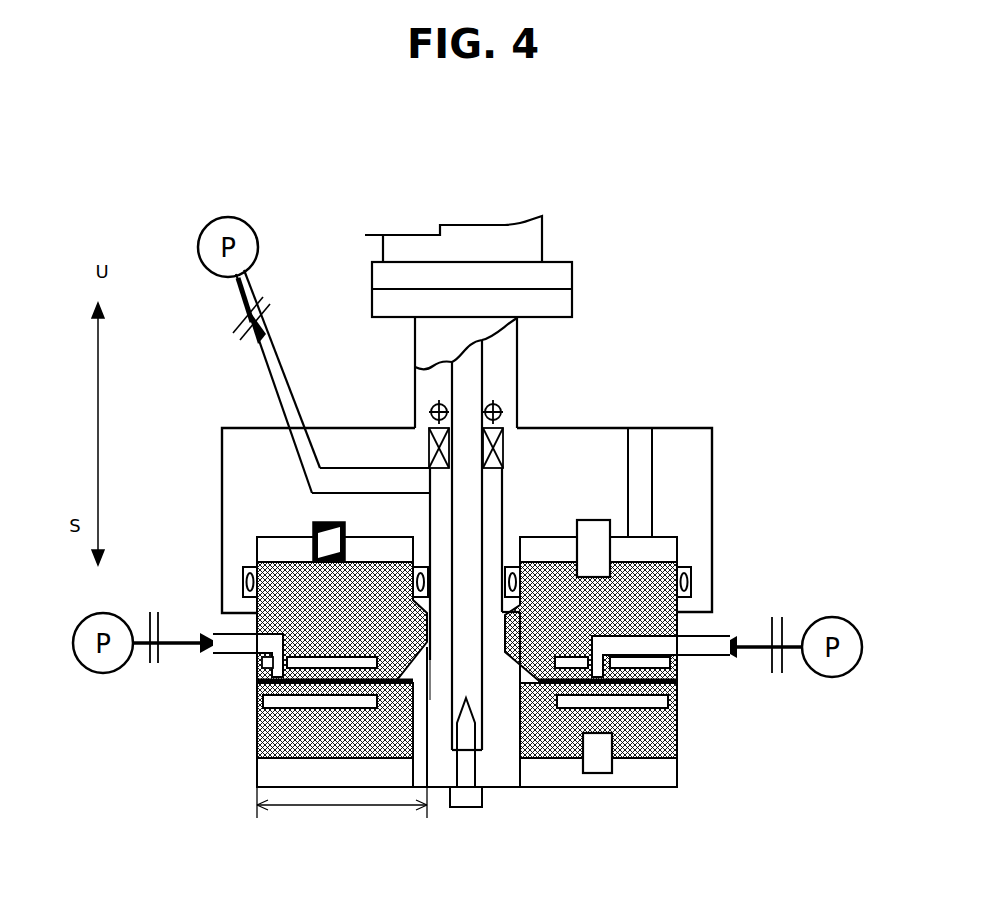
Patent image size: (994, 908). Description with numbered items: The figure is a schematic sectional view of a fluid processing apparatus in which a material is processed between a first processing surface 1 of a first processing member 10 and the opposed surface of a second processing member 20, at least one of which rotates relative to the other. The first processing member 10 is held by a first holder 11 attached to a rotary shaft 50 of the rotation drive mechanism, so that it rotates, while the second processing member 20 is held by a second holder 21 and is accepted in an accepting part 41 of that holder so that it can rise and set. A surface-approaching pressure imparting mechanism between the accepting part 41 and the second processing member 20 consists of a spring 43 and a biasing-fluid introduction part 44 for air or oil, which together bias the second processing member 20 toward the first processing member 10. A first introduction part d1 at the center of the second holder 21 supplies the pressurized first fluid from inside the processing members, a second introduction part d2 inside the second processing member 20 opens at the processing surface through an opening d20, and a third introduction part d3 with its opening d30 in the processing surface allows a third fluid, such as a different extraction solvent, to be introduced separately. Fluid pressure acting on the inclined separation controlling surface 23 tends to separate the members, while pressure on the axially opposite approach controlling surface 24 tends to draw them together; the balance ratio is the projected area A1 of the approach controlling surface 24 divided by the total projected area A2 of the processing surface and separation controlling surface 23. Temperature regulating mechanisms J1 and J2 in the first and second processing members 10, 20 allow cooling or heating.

The first processing surface 1 is at (257, 718).
The first processing member 10 is at (677, 742).
The first holder 11 is at (655, 768).
The second processing member 20 is at (300, 545).
The second holder 21 is at (690, 482).
The separation controlling surface 23 is at (507, 662).
The approach controlling surface 24 is at (500, 590).
The accepting part 41 is at (373, 548).
The spring 43 is at (298, 548).
The biasing-fluid introduction part 44 is at (637, 460).
The rotary shaft 50 is at (470, 620).
The first introduction part d1 is at (305, 405).
The second introduction part d2 is at (620, 650).
The third introduction part d3 is at (277, 645).
The opening of the second introduction part d20 is at (622, 572).
The opening of the third introduction part d30 is at (262, 668).
The temperature regulating mechanism J1 is at (257, 745).
The temperature regulating mechanism J2 is at (690, 625).
The projected area of the approach controlling surface A1 is at (430, 625).
The total projected area of the second processing surface and separation controlling A2 is at (337, 808).